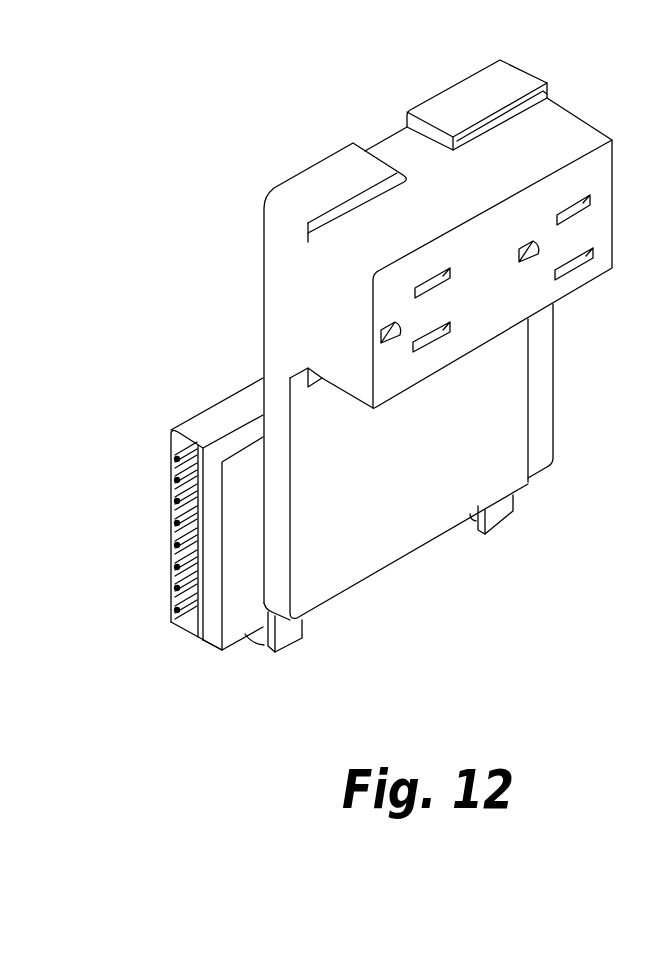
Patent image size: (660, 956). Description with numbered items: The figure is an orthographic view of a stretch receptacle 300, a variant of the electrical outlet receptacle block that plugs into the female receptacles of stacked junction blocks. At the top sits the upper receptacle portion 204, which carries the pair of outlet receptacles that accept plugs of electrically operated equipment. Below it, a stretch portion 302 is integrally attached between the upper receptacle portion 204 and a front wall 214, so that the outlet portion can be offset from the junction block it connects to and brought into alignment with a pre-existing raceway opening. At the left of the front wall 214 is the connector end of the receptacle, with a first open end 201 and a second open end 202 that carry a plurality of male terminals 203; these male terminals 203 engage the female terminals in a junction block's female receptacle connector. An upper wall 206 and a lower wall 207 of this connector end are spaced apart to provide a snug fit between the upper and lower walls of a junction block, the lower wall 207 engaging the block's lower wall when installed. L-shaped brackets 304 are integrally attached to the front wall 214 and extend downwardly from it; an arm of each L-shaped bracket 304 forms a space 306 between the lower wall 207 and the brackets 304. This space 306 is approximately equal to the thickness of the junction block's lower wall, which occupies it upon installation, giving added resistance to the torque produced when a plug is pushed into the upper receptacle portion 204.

The first open end 201 is at (188, 450).
The second open end 202 is at (553, 386).
The male terminals 203 is at (176, 529).
The upper receptacle portion 204 is at (598, 129).
The upper wall 206 is at (221, 411).
The lower wall 207 is at (233, 648).
The front wall 214 is at (233, 576).
The stretch receptacle 300 is at (243, 287).
The stretch portion 302 is at (421, 503).
The L-shaped brackets 304 is at (498, 517).
The space 306 is at (267, 647).